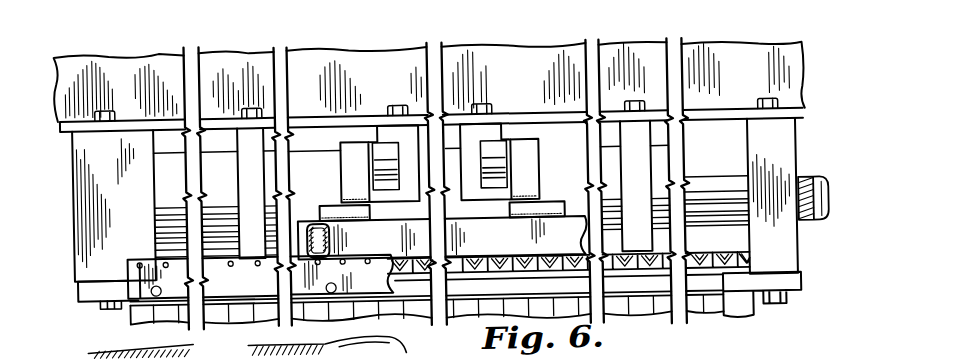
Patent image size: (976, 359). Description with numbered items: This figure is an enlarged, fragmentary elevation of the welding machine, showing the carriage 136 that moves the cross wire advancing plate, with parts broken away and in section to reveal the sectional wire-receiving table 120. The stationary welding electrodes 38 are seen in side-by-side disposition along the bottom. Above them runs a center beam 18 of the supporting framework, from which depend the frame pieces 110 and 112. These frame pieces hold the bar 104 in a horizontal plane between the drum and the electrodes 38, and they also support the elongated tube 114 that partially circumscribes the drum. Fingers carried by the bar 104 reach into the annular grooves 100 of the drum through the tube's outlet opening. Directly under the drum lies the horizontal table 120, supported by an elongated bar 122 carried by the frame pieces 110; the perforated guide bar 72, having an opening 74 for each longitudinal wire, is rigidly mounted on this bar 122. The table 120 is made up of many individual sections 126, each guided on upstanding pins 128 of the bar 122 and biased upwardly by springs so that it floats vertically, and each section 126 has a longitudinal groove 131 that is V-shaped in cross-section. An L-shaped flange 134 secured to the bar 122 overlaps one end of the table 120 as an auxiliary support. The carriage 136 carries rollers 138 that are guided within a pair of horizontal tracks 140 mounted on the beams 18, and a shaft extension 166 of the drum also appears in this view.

The center beam 18 is at (714, 63).
The stationary welding electrode 38 is at (650, 343).
The horizontal bar 72 is at (352, 319).
The opening 74 is at (147, 260).
The annular groove 100 is at (205, 343).
The bar 104 is at (733, 261).
The frame piece 110 is at (83, 240).
The frame piece 112 is at (246, 146).
The elongated tube 114 is at (158, 170).
The horizontal table 120 is at (687, 267).
The elongated bar 122 is at (86, 298).
The section 126 is at (742, 272).
The upstanding pin 128 is at (343, 347).
The groove 131 is at (523, 277).
The L-shaped flange 134 is at (130, 304).
The carriage 136 is at (511, 249).
The roller 138 is at (383, 150).
The track 140 is at (386, 197).
The shaft extension 166 is at (738, 191).